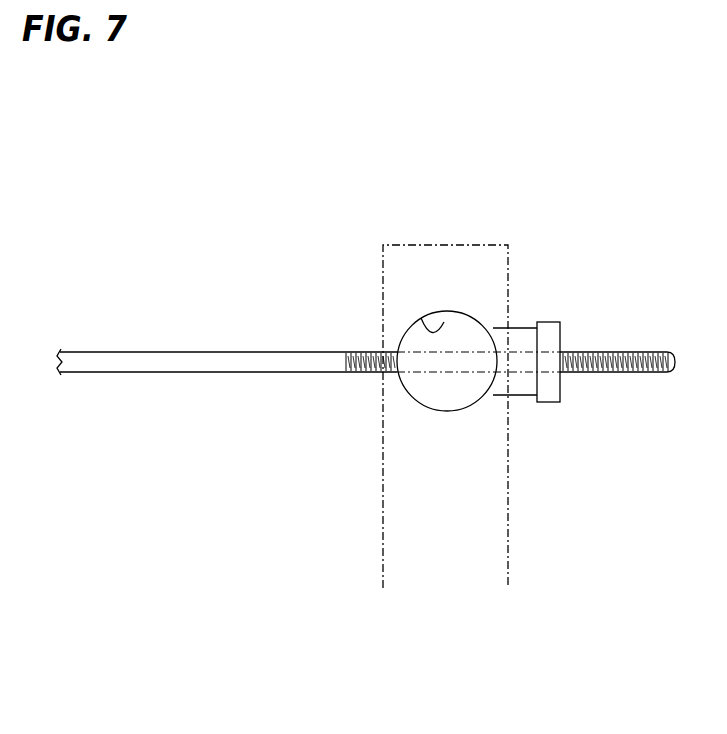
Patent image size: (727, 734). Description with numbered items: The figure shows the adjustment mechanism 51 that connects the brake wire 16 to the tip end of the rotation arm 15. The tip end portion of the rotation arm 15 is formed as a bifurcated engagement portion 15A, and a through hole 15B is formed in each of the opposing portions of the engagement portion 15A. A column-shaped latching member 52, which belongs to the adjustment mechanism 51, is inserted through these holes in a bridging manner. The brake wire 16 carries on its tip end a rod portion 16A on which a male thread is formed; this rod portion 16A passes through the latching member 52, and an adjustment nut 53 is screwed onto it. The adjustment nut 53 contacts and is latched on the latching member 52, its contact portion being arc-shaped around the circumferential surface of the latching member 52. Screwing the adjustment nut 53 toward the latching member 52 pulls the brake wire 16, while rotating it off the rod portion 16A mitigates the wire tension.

The rotation arm 15 is at (472, 353).
The engagement portion 15A is at (462, 245).
The through hole 15B is at (443, 325).
The brake wire 16 is at (185, 352).
The rod portion 16A is at (633, 352).
The adjustment mechanism 51 is at (556, 285).
The latching member 52 is at (428, 410).
The adjustment nut 53 is at (520, 396).